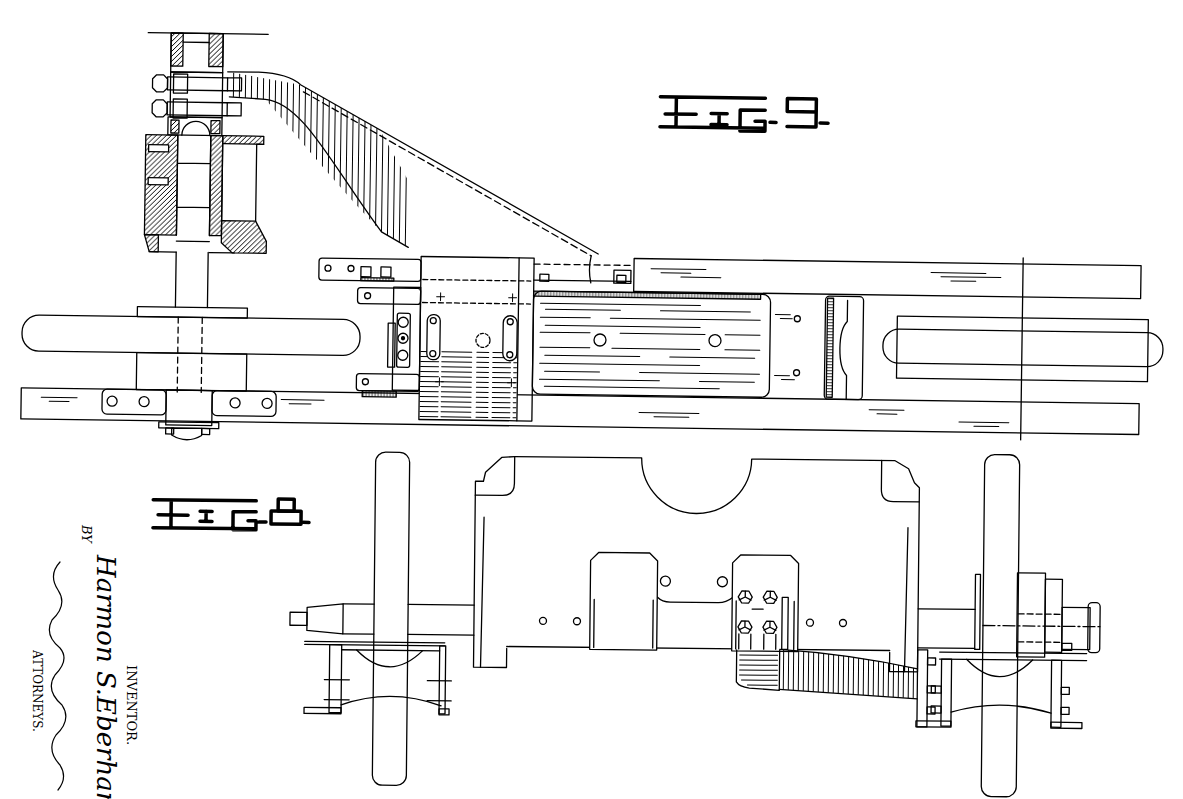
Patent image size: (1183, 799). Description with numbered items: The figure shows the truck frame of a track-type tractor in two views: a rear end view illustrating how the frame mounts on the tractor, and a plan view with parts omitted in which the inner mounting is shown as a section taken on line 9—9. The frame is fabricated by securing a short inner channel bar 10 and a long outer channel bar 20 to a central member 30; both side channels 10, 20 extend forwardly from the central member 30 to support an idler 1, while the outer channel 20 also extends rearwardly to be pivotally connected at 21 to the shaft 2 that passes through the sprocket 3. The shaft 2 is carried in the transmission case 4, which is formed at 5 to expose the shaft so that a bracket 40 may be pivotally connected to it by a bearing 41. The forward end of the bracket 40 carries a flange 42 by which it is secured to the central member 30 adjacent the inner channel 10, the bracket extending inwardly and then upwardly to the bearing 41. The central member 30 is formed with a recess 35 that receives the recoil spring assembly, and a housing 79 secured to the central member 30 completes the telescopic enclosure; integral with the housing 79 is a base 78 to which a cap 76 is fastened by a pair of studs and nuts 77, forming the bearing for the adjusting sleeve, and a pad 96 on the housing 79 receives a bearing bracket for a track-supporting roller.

In FIG. 9, the idler 1 is at (960, 318).
In FIG. 9, the shaft 2 is at (195, 299).
In FIG. 8, the shaft 2 is at (938, 619).
In FIG. 9, the sprocket 3 is at (72, 323).
In FIG. 8, the sprocket 3 is at (983, 529).
In FIG. 9, the transmission case 4 is at (141, 231).
In FIG. 8, the transmission case 4 is at (790, 608).
In FIG. 9, the formed portion of transmission case 5 is at (225, 141).
In FIG. 8, the formed portion of transmission case 5 is at (772, 585).
In FIG. 9, the inner channel bar 10 is at (902, 269).
In FIG. 9, the outer channel bar 20 is at (1120, 412).
In FIG. 8, the outer channel bar 20 is at (330, 692).
In FIG. 9, the pivotal connection 21 is at (163, 409).
In FIG. 8, the pivotal connection 21 is at (1070, 606).
In FIG. 9, the central member 30 is at (805, 349).
In FIG. 8, the central member 30 is at (443, 699).
In FIG. 9, the recess 35 is at (717, 308).
In FIG. 9, the bracket 40 is at (447, 165).
In FIG. 8, the bracket 40 is at (793, 690).
In FIG. 9, the bearing 41 is at (170, 104).
In FIG. 8, the bearing 41 is at (777, 613).
In FIG. 9, the flange 42 is at (590, 283).
In FIG. 8, the flange 42 is at (908, 705).
In FIG. 9, the cap 76 is at (400, 344).
In FIG. 9, the studs and nuts 77 is at (403, 355).
In FIG. 9, the base 78 is at (397, 324).
In FIG. 9, the housing 79 is at (490, 262).
In FIG. 9, the pad 96 is at (483, 317).
In FIG. 8, the section line 9— 9 is at (689, 670).